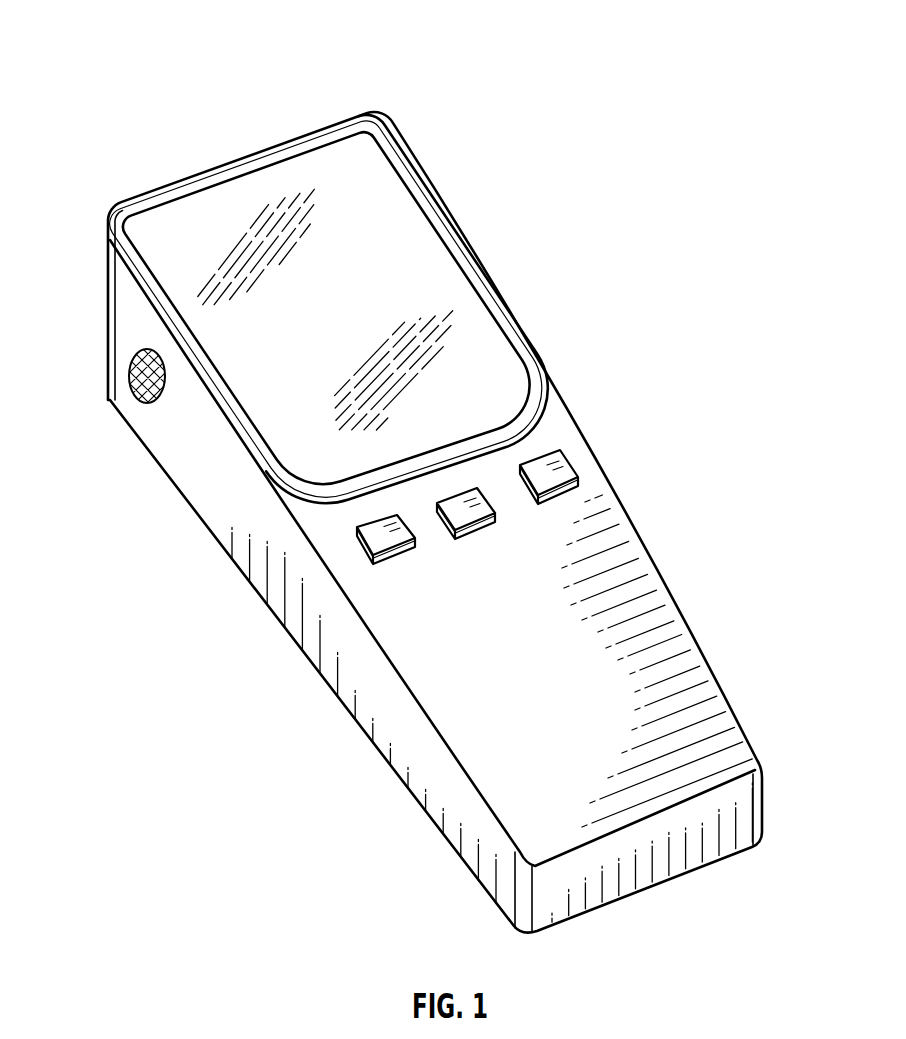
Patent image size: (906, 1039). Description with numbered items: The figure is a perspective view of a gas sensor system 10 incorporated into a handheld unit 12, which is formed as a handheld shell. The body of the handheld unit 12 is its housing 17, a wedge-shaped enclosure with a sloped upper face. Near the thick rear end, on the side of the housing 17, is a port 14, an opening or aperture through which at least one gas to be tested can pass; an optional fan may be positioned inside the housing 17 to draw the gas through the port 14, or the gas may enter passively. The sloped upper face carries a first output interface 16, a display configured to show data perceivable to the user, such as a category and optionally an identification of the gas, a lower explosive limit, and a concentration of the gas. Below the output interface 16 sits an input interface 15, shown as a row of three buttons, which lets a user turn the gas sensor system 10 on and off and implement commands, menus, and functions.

The gas sensor system 10 is at (527, 92).
The handheld unit 12 is at (647, 618).
The port 14 is at (130, 378).
The input interface 15 is at (550, 477).
The output interface 16 is at (400, 243).
The housing 17 is at (237, 498).